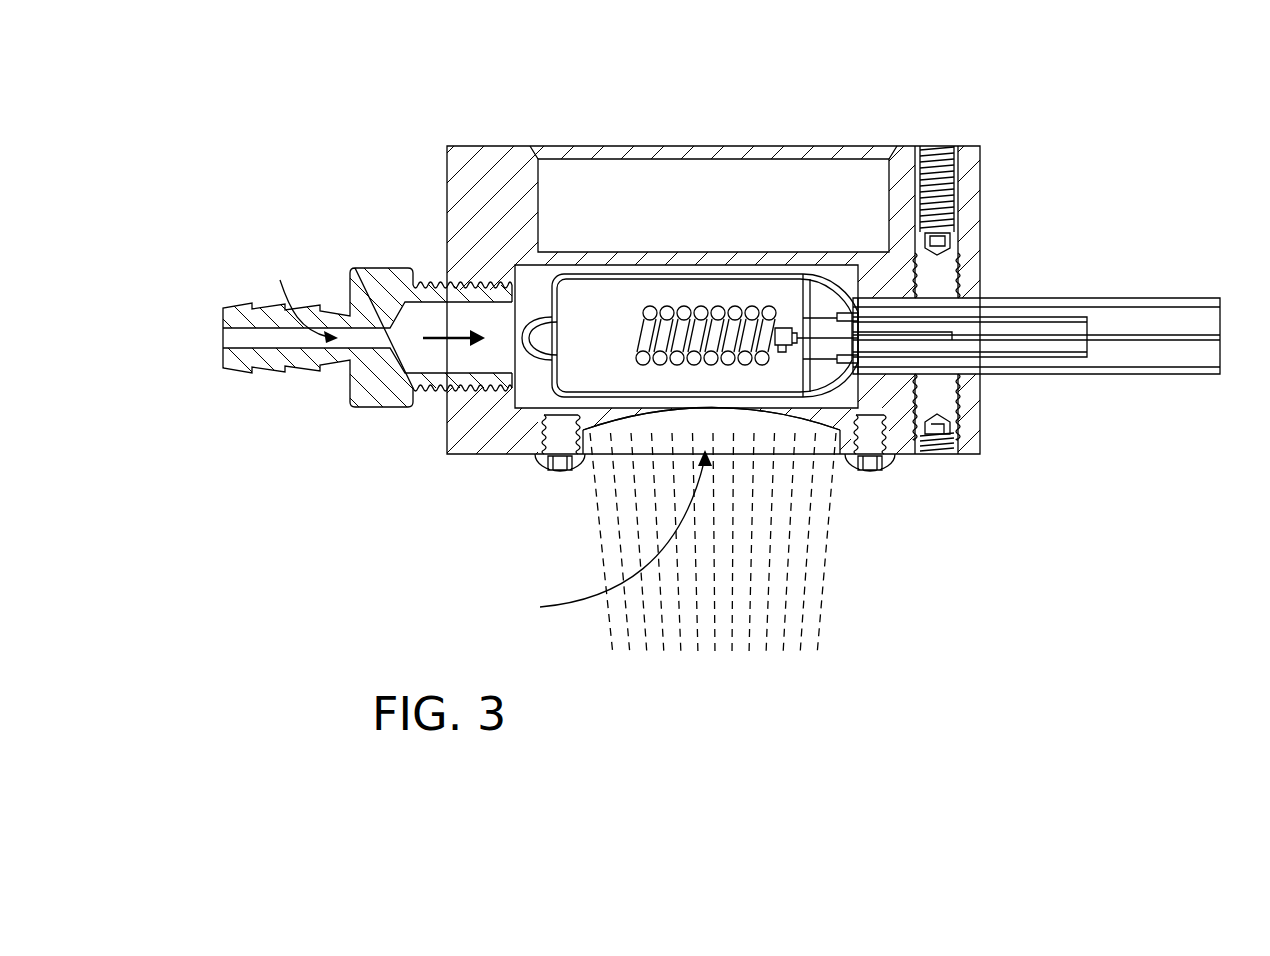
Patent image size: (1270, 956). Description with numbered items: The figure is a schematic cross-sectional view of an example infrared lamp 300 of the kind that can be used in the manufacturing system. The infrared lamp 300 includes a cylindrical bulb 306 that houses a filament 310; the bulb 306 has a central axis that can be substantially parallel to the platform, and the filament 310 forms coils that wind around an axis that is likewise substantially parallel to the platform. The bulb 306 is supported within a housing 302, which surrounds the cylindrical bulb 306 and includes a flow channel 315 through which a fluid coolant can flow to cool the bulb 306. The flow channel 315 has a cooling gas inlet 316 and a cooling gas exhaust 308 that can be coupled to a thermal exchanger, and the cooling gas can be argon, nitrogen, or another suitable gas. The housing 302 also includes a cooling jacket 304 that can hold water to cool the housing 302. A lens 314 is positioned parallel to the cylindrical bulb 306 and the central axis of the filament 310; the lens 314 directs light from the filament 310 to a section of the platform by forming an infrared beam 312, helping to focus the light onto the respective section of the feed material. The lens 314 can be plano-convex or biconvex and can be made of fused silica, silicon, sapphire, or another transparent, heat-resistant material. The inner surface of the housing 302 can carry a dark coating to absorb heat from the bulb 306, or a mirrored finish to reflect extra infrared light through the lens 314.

The infrared lamp 300 is at (250, 152).
The housing 302 is at (467, 201).
The cooling jacket 304 is at (678, 163).
The cylindrical bulb 306 is at (655, 295).
The cooling gas exhaust 308 is at (1122, 343).
The filament 310 is at (790, 345).
The infrared beam 312 is at (790, 593).
The lens 314 is at (663, 433).
The flow channel 315 is at (532, 280).
The cooling gas inlet 316 is at (459, 342).